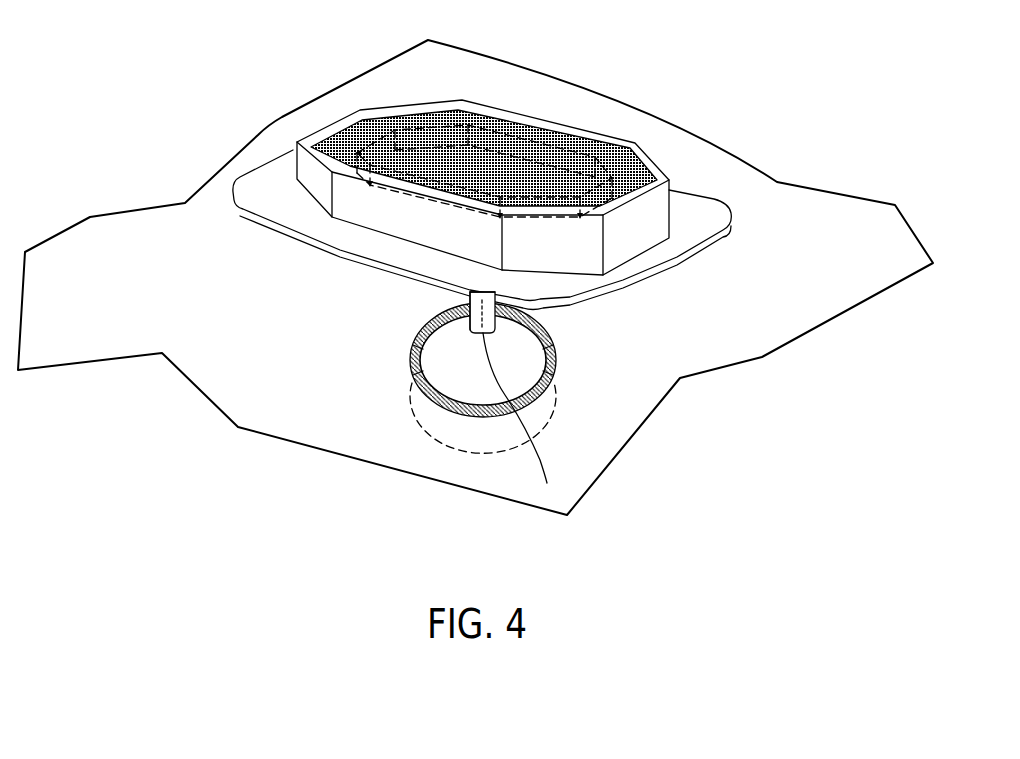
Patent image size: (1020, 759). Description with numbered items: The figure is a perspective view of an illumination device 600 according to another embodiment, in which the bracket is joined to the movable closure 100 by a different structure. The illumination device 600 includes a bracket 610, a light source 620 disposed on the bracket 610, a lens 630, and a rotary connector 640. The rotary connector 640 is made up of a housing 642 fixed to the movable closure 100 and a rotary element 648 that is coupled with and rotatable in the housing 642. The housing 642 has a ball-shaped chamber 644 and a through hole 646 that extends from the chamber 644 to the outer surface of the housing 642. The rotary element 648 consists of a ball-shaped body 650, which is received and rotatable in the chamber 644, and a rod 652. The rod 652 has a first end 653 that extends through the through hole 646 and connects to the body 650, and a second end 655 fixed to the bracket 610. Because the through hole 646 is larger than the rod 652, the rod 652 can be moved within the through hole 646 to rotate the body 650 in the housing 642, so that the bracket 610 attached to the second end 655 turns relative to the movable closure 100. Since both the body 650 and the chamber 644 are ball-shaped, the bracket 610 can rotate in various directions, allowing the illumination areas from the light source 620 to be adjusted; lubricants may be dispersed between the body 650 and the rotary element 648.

The movable closure 100 is at (826, 326).
The illumination device 600 is at (472, 94).
The bracket 610 is at (733, 222).
The light source 620 is at (471, 208).
The lens 630 is at (582, 128).
The rotary connector 640 is at (555, 382).
The housing 642 is at (415, 388).
The ball-shaped chamber 644 is at (543, 348).
The through hole 646 is at (500, 302).
The rotary element 648 is at (427, 350).
The ball-shaped body 650 is at (440, 368).
The rod 652 is at (466, 302).
The first end 653 is at (529, 423).
The second end 655 is at (476, 291).